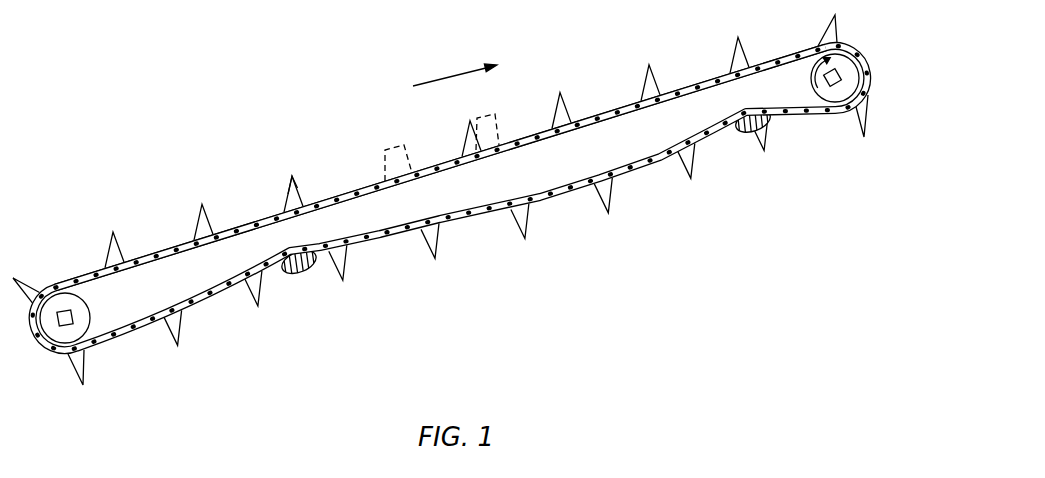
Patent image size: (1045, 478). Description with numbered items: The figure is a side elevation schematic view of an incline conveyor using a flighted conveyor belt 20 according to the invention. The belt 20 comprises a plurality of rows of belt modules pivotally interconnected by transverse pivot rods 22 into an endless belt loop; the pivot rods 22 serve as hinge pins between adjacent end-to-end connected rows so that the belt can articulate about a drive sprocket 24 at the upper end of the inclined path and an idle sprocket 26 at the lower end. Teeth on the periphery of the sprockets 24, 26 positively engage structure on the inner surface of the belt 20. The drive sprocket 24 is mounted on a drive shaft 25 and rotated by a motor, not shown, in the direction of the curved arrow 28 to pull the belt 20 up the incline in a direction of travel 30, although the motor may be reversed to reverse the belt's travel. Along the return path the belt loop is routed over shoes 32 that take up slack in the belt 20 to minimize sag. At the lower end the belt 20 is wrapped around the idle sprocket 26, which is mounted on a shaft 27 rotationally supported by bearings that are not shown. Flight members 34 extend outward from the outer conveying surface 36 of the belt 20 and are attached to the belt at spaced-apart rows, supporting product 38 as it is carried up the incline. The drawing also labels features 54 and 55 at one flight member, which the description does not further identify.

The flighted conveyor belt 20 is at (449, 217).
The transverse pivot rods 22 is at (630, 172).
The drive sprocket 24 is at (826, 95).
The drive shaft 25 is at (836, 86).
The idle sprocket 26 is at (64, 342).
The shaft 27 is at (67, 308).
The curved arrow 28 is at (816, 76).
The direction of travel 30 is at (456, 67).
The shoes 32 is at (297, 276).
The flight members 34 is at (203, 206).
The outer conveying surface 36 is at (696, 84).
The product 38 is at (497, 115).
The cleat base 54 is at (305, 170).
The cleat tip 55 is at (283, 187).